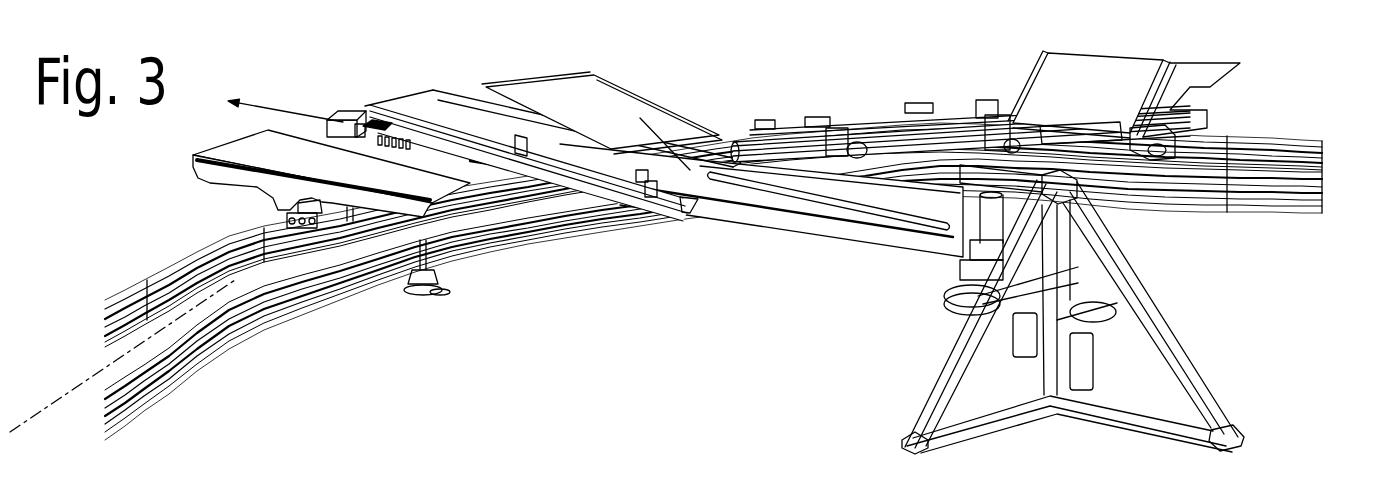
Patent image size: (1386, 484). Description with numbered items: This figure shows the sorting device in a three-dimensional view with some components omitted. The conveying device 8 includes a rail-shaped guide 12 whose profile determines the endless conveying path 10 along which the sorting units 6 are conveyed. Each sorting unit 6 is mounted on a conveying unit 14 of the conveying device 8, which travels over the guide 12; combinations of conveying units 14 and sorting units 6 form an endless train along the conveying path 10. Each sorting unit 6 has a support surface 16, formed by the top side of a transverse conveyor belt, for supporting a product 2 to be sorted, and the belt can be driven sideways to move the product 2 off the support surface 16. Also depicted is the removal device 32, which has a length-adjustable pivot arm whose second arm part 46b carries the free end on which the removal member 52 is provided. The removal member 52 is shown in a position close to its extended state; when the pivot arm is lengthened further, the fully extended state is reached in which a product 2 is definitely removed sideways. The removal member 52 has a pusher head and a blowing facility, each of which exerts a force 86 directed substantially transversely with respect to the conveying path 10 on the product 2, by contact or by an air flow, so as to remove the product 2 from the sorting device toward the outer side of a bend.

The product 2 is at (350, 107).
The sorting unit 6 is at (1033, 62).
The conveying device 8 is at (1242, 97).
The conveying path 10 is at (84, 383).
The rail-shaped guide 12 is at (200, 353).
The conveying unit 14 is at (912, 107).
The support surface 16 is at (1131, 76).
The removal device 32 is at (904, 353).
The second arm part 46b is at (443, 152).
The removal member 52 is at (377, 108).
The force 86 is at (277, 107).